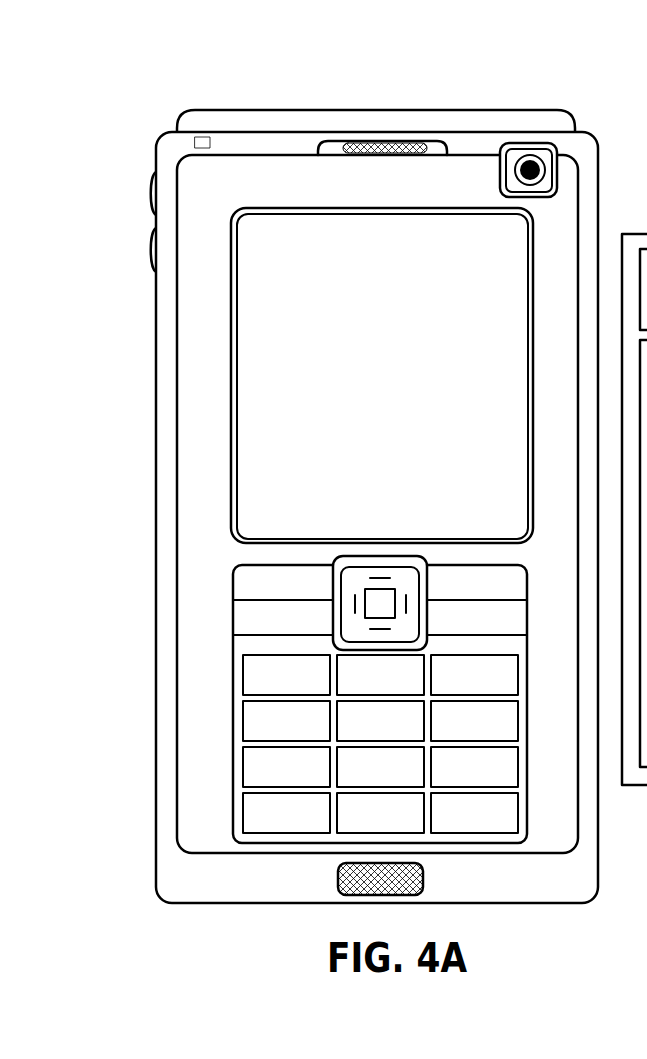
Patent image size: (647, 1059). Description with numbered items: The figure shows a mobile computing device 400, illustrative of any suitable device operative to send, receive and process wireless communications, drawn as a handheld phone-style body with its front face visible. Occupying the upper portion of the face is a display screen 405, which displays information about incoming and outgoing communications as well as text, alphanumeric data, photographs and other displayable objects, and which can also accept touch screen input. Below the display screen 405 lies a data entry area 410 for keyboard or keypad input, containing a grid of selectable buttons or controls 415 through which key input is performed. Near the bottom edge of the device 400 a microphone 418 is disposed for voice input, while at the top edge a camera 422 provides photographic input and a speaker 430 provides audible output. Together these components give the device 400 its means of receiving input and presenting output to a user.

The mobile computing device 400 is at (150, 138).
The display screen 405 is at (270, 360).
The data entry area 410 is at (233, 613).
The selectable buttons or controls 415 is at (256, 720).
The microphone 418 is at (337, 883).
The camera 422 is at (532, 167).
The speaker 430 is at (388, 147).